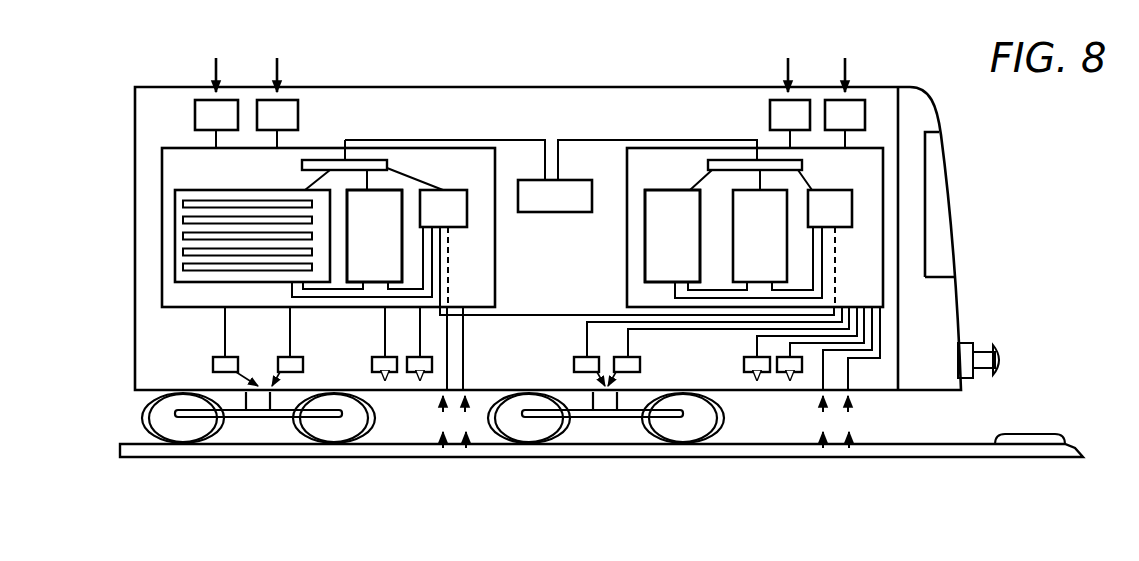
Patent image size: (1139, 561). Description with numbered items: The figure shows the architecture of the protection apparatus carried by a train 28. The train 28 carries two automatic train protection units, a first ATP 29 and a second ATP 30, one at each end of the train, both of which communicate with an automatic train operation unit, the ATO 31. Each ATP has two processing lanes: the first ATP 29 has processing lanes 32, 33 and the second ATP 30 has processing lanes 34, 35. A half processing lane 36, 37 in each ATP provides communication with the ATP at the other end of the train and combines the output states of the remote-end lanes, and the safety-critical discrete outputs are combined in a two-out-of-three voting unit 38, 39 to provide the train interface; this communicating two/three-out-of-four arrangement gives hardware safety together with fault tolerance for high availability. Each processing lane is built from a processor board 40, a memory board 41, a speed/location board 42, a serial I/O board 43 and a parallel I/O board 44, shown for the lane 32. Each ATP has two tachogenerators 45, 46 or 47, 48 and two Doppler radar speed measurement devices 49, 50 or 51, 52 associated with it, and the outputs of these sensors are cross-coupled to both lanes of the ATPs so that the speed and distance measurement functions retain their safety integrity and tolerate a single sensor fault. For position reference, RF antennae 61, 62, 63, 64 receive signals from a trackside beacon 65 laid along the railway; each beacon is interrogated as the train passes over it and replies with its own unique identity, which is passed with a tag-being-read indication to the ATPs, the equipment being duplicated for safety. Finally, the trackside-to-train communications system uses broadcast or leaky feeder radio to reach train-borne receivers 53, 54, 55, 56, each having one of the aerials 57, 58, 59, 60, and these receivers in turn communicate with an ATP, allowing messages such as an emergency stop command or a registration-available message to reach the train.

The train 28 is at (965, 221).
The ATP 29 is at (445, 176).
The ATP 30 is at (673, 178).
The ATO 31 is at (581, 184).
The processing lane 32 is at (193, 188).
The processing lane 33 is at (378, 262).
The processing lane 34 is at (650, 237).
The processing lane 35 is at (788, 195).
The half processing lane 36 is at (466, 214).
The half processing lane 37 is at (852, 226).
The 2-out-of-3 voting unit 38 is at (374, 166).
The 2-out-of-3 voting unit 39 is at (727, 163).
The processor board 40 is at (183, 204).
The memory board 41 is at (183, 219).
The speed/location board 42 is at (183, 236).
The serial I/O board 43 is at (183, 252).
The parallel I/O board 44 is at (183, 268).
The tachogenerator 45 is at (305, 366).
The tachogenerator 46 is at (213, 358).
The tachogenerator 47 is at (582, 368).
The tachogenerator 48 is at (630, 368).
The Doppler radar speed measurement device 49 is at (387, 390).
The Doppler radar speed measurement device 50 is at (419, 390).
The Doppler radar speed measurement device 51 is at (757, 392).
The Doppler radar speed measurement device 52 is at (790, 392).
The train-borne receiver 53 is at (195, 113).
The train-borne receiver 54 is at (298, 108).
The train-borne receiver 55 is at (770, 111).
The train-borne receiver 56 is at (865, 113).
The aerial 57 is at (203, 71).
The aerial 58 is at (265, 72).
The aerial 59 is at (799, 60).
The aerial 60 is at (850, 60).
The RF antenna 61 is at (443, 392).
The RF antenna 62 is at (465, 392).
The RF antenna 63 is at (823, 392).
The RF antenna 64 is at (848, 392).
The beacon 65 is at (1043, 440).